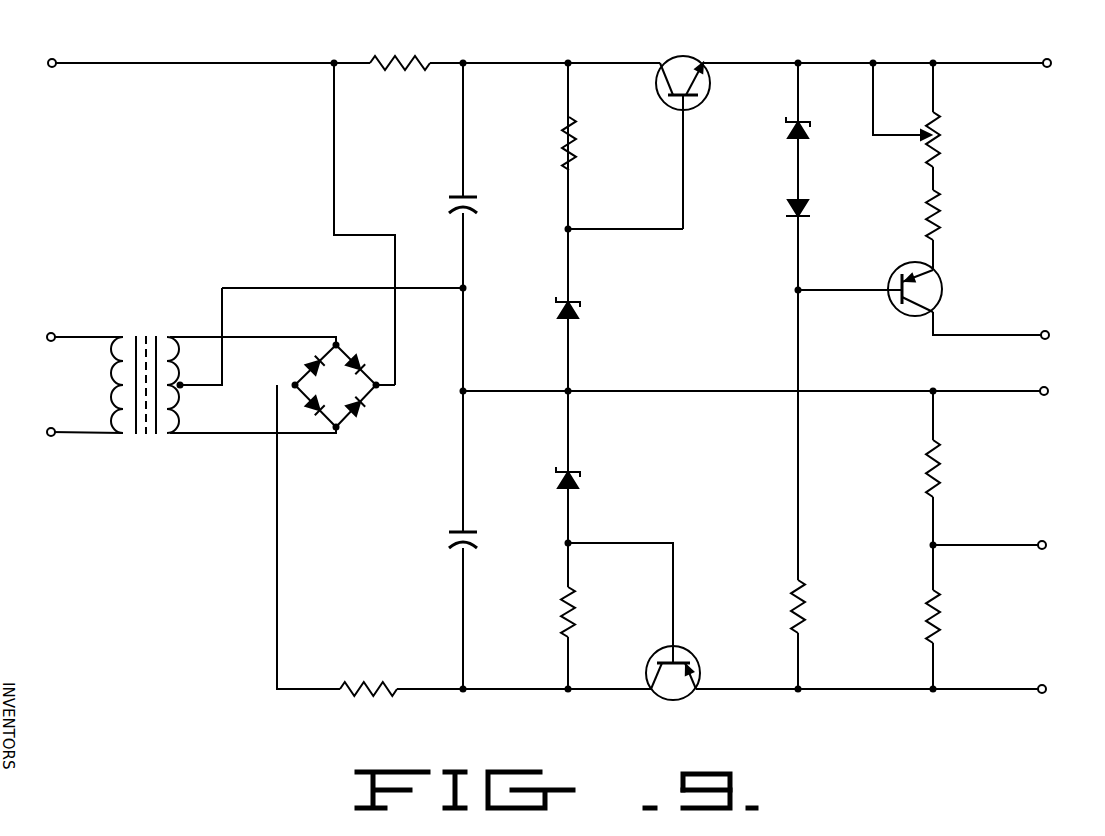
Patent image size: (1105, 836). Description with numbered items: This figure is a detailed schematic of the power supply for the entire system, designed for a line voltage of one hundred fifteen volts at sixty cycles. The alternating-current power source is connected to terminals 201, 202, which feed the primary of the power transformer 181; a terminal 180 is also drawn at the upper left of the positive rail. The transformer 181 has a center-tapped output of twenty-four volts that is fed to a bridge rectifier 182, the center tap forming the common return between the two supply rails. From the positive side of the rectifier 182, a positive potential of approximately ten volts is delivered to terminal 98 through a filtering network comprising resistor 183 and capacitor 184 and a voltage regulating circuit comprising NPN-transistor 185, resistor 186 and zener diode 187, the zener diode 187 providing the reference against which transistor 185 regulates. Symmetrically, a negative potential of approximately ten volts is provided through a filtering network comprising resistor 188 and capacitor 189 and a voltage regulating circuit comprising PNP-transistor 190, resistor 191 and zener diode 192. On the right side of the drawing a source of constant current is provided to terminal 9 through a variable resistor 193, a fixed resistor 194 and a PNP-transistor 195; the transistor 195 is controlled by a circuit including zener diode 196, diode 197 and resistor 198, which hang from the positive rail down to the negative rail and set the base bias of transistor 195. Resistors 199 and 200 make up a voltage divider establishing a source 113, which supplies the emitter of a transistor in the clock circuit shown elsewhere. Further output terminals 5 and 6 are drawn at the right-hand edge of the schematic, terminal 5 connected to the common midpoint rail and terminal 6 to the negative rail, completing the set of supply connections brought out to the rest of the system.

The input terminal 180 is at (53, 67).
The power transformer 181 is at (146, 330).
The bridge rectifier 182 is at (368, 408).
The resistor 183 is at (396, 57).
The capacitor 184 is at (478, 205).
The NPN-transistor 185 is at (710, 32).
The resistor 186 is at (581, 148).
The zener diode 187 is at (585, 316).
The resistor 188 is at (360, 694).
The capacitor 189 is at (450, 540).
The PNP-transistor 190 is at (682, 700).
The resistor 191 is at (577, 606).
The zener diode 192 is at (585, 486).
The variable resistor 193 is at (945, 142).
The fixed resistor 194 is at (947, 215).
The PNP-transistor 195 is at (943, 280).
The zener diode 196 is at (786, 128).
The diode 197 is at (786, 217).
The resistor 198 is at (792, 592).
The resistor 199 is at (941, 473).
The resistor 200 is at (940, 622).
The terminal 201 is at (50, 333).
The terminal 202 is at (51, 436).
The terminal 98 is at (1062, 44).
The terminal 9 is at (1047, 331).
The output terminal 5 is at (1044, 396).
The source 113 is at (1048, 522).
The output terminal 6 is at (1047, 666).